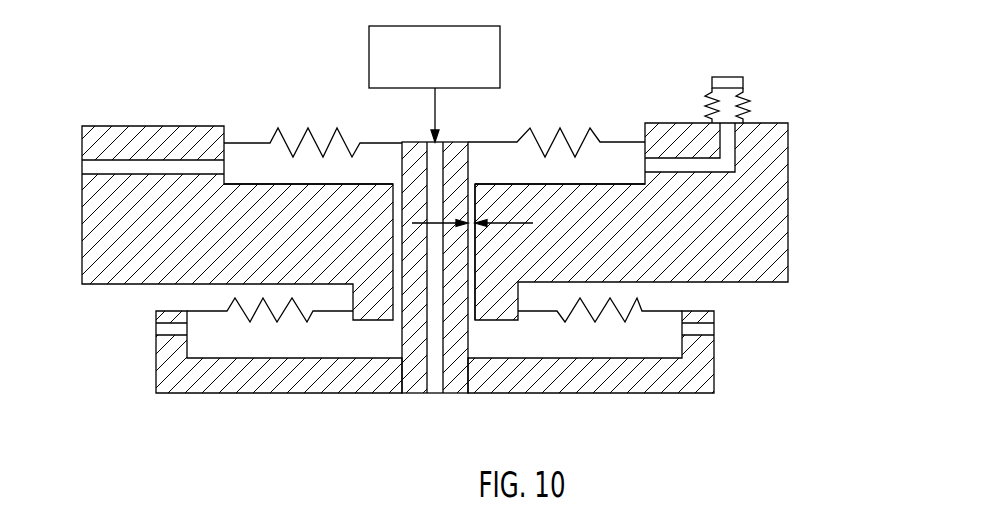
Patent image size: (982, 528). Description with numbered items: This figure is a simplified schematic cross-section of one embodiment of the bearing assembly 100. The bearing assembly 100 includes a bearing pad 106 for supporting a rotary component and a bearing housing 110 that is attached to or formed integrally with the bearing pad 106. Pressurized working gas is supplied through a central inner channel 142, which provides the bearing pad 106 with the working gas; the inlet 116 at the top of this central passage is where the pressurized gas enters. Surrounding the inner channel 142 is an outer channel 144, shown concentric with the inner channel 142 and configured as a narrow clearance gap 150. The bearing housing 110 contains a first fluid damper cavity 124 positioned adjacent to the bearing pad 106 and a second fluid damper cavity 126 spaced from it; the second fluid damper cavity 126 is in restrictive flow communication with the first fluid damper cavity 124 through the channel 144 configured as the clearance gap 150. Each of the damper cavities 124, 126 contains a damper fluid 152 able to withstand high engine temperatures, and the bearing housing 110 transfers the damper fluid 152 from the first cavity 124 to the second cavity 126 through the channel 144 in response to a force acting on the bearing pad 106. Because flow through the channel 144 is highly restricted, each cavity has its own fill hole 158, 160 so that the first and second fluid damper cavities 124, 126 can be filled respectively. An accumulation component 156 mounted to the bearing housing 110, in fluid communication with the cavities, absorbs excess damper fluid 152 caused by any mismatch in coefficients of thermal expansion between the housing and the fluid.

The bearing assembly 100 is at (451, 231).
The bearing pad 106 is at (478, 349).
The bearing housing 110 is at (442, 214).
The gas inlet pillar 116 is at (458, 263).
The first fluid damper cavity 124 is at (272, 338).
The second fluid damper cavity 126 is at (260, 158).
The inner channel 142 is at (437, 378).
The outer channel 144 is at (478, 267).
The clearance gap 150 is at (493, 222).
The damper fluid 152 is at (360, 175).
The accumulation component 156 is at (727, 77).
The fill hole 158 is at (172, 340).
The fill hole 160 is at (90, 167).